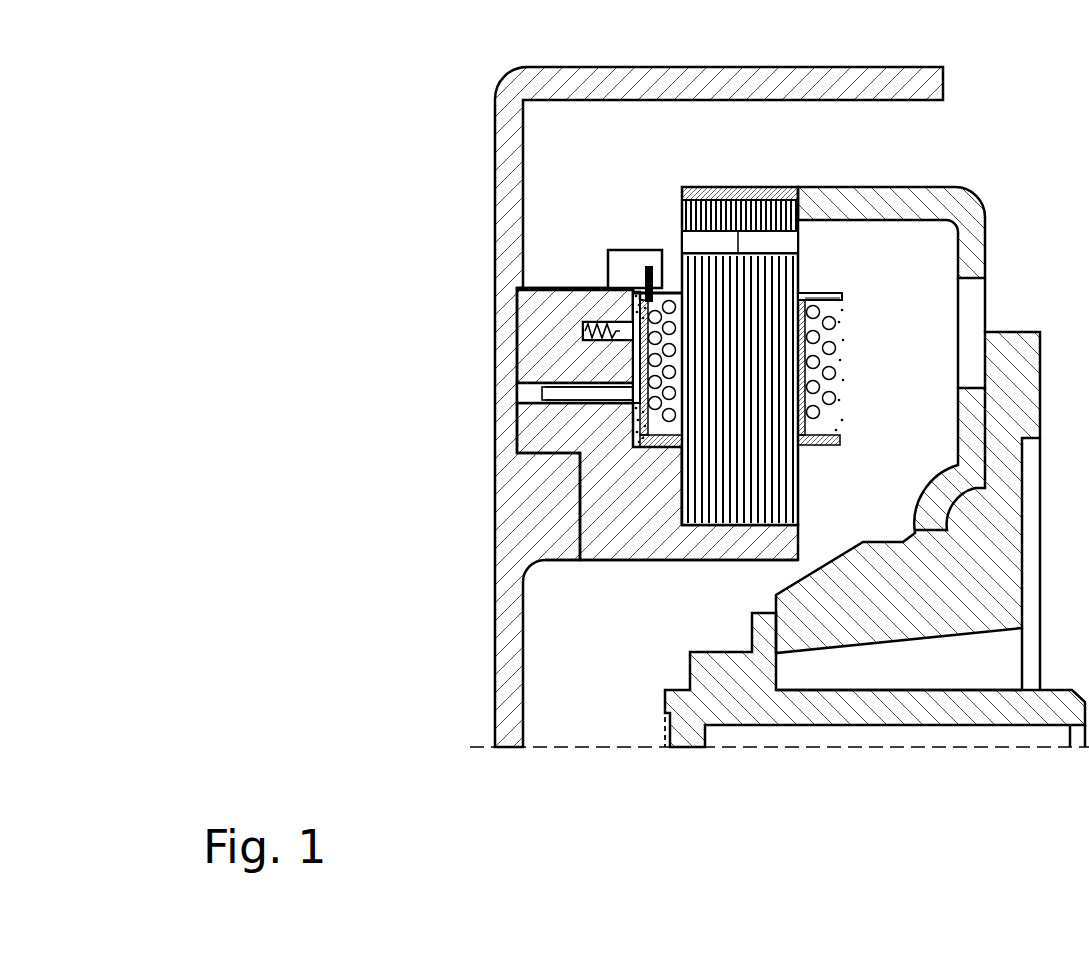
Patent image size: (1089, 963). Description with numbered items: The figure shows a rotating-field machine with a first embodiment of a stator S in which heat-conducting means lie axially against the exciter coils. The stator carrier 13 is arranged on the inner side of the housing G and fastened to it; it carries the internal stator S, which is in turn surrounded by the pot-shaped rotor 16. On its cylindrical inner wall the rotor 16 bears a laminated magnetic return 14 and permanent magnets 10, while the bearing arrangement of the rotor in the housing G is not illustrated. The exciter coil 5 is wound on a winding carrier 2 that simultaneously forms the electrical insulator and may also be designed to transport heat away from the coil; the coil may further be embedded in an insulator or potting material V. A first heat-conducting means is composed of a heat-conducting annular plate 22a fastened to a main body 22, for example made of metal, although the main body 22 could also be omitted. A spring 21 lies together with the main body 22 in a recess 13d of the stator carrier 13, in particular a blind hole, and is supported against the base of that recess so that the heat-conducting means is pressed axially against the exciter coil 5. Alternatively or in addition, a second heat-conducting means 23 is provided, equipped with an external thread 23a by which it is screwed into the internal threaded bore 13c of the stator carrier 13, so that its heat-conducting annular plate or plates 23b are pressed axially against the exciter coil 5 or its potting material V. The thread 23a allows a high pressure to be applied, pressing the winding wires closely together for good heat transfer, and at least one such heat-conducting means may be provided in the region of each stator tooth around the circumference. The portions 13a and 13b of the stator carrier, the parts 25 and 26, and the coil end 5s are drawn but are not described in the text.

The housing G is at (503, 150).
The stator carrier 13 is at (797, 542).
The upper arm of holder 13a is at (530, 325).
The lower portion of holder 13b is at (673, 500).
The internal bore with internal thread 13c is at (532, 393).
The recess 13d is at (530, 307).
The heat-conducting means 23 is at (590, 397).
The external thread 23a is at (630, 405).
The heat-conducting annular plate 23b is at (638, 410).
The spring 21 is at (600, 318).
The main body 22 is at (626, 333).
The heat-conducting annular plate 22a is at (637, 318).
The connector housing 25 is at (640, 286).
The terminal pin 26 is at (657, 262).
The coil lead wire 5s is at (642, 422).
The stator S is at (731, 285).
The laminated magnetic return 14 is at (782, 200).
The permanent magnets 10 is at (800, 236).
The winding carrier 2 is at (822, 293).
The insulator or potting material V is at (845, 297).
The exciter coil 5 is at (838, 356).
The pot-shaped rotor 16 is at (963, 228).